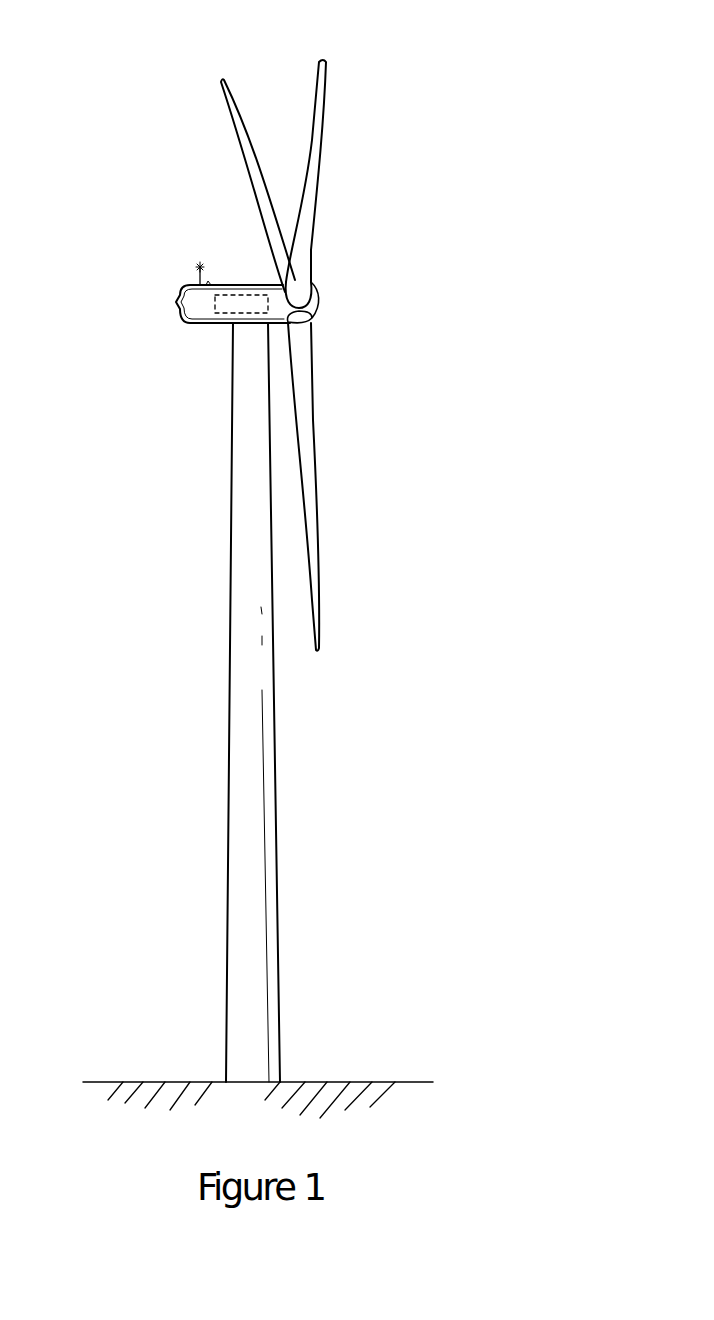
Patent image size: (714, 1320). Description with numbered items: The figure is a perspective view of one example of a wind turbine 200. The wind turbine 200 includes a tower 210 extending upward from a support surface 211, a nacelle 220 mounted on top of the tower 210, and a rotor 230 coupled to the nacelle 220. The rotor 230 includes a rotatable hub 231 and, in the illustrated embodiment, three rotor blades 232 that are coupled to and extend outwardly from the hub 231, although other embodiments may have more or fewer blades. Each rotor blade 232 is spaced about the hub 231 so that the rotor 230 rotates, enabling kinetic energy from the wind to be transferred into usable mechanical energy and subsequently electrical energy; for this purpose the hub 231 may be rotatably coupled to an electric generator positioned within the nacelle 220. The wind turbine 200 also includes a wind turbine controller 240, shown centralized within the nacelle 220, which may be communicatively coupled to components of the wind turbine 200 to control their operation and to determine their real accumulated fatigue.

The wind turbine 200 is at (433, 135).
The tower 210 is at (240, 807).
The support surface 211 is at (160, 1082).
The nacelle 220 is at (213, 327).
The rotor 230 is at (325, 282).
The rotatable hub 231 is at (322, 307).
The rotor blade 232 is at (313, 102).
The wind turbine controller 240 is at (240, 297).